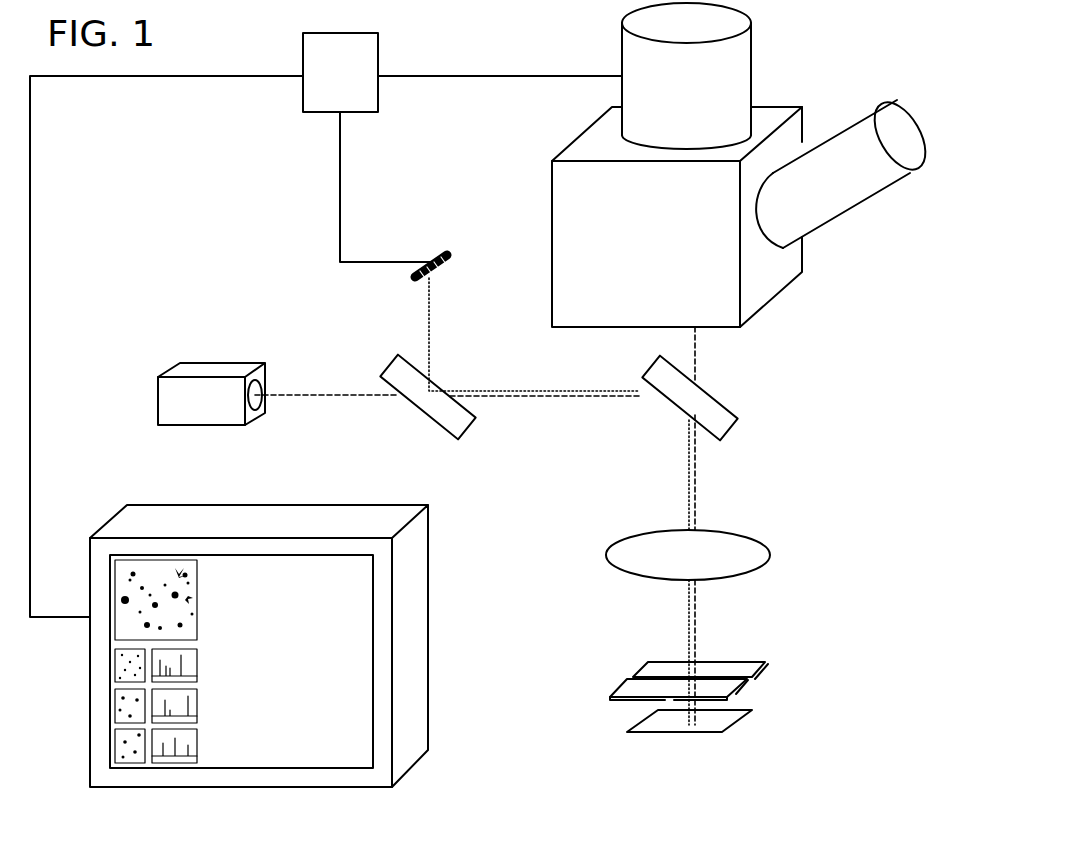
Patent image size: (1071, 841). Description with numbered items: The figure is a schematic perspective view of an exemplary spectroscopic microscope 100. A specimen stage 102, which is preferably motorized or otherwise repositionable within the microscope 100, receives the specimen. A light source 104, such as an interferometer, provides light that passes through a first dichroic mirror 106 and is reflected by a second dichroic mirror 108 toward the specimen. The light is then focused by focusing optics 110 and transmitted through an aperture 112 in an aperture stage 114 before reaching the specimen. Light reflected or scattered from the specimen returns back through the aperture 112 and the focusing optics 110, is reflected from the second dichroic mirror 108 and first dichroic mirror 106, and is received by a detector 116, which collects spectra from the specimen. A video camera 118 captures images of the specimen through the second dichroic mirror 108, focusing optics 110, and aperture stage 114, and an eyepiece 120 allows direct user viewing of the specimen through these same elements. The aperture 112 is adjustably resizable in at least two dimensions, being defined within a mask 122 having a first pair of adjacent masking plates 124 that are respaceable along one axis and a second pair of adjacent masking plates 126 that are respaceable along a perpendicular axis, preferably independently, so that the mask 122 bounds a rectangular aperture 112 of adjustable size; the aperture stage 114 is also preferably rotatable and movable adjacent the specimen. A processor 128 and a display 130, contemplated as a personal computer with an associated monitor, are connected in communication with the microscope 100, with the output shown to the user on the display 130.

The spectroscopic microscope 100 is at (836, 90).
The specimen stage 102 is at (678, 735).
The light source 104 is at (163, 378).
The first dichroic mirror 106 is at (433, 425).
The second dichroic mirror 108 is at (737, 407).
The focusing optics 110 is at (748, 535).
The aperture 112 is at (697, 672).
The aperture stage 114 is at (612, 697).
The detector 116 is at (437, 256).
The video camera 118 is at (622, 46).
The eyepiece 120 is at (870, 196).
The mask 122 is at (748, 680).
The first pair of adjacent masking plates 124 is at (647, 668).
The second pair of adjacent masking plates 126 is at (630, 701).
The processor 128 is at (313, 114).
The display 130 is at (430, 578).